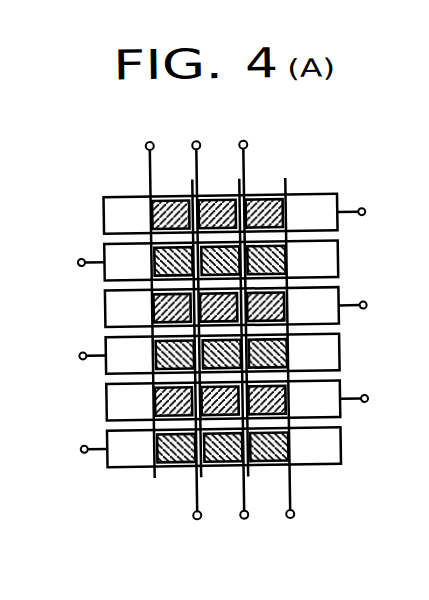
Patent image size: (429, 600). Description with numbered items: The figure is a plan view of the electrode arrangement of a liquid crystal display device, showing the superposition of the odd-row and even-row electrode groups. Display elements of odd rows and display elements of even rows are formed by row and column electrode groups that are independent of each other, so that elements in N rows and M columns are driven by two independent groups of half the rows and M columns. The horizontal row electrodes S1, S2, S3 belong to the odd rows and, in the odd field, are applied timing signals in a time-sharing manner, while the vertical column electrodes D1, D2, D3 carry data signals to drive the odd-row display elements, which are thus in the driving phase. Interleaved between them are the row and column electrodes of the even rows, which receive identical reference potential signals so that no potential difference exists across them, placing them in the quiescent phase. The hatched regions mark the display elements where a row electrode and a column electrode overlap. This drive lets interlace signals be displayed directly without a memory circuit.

The column electrode D1 is at (149, 298).
The column electrode D2 is at (200, 298).
The column electrode D3 is at (246, 297).
The row electrode S1 is at (257, 213).
The row electrode S2 is at (258, 306).
The row electrode S3 is at (259, 399).